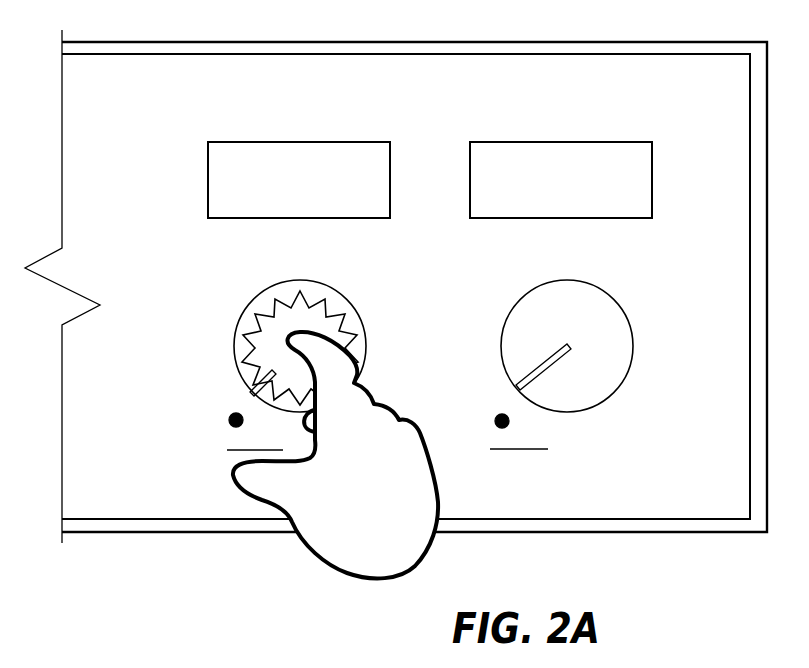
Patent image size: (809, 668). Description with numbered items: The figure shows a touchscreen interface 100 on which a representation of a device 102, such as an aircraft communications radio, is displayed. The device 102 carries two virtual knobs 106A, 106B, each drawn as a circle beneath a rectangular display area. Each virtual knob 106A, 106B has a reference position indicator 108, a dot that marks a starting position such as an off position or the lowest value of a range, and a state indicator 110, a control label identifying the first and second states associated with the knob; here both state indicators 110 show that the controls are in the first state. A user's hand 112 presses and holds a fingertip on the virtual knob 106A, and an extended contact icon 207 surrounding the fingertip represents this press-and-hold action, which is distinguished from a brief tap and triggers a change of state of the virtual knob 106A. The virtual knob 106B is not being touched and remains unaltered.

The touchscreen interface 100 is at (612, 48).
The device 102 is at (387, 66).
The virtual knob 106A is at (293, 346).
The virtual knob 106B is at (597, 321).
The reference position indicator 108 is at (230, 420).
The state indicator 110 is at (229, 440).
The hand 112 is at (385, 501).
The extended contact icon 207 is at (330, 322).